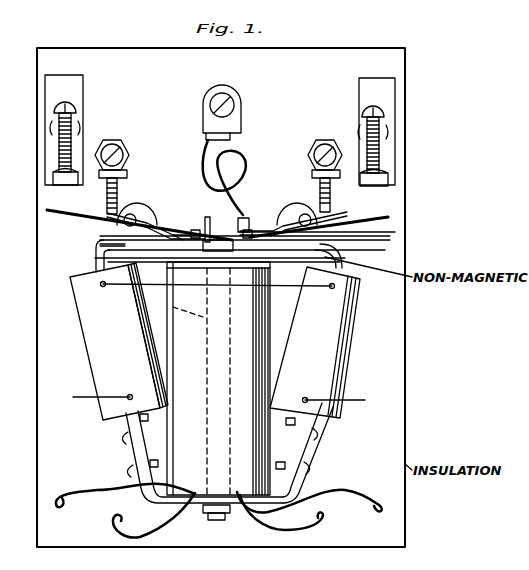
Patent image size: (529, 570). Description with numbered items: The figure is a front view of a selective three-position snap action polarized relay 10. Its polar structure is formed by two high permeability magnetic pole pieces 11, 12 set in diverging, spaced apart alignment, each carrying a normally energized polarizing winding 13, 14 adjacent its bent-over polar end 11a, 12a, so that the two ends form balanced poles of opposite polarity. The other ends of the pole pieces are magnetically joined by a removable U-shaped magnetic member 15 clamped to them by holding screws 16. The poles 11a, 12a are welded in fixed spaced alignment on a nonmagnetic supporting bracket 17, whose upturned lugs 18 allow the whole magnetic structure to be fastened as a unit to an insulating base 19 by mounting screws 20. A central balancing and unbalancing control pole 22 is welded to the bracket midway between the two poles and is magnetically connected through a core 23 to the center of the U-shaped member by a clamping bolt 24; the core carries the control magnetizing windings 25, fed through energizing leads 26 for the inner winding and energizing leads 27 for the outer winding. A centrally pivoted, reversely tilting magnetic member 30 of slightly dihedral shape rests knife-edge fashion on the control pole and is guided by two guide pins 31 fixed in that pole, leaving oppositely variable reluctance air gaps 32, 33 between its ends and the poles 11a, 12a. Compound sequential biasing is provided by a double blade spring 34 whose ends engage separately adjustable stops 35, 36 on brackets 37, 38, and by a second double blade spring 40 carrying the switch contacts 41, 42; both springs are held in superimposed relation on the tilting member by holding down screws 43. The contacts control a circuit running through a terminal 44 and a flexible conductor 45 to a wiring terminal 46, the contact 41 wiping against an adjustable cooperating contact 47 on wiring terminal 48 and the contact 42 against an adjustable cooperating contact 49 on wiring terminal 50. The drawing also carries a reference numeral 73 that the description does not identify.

The polarized relay 10 is at (351, 440).
The magnetic pole piece 11 is at (96, 262).
The bent-over polar end 11a is at (105, 242).
The magnetic pole piece 12 is at (338, 257).
The bent-over polar end 12a is at (302, 249).
The polarizing winding 13 is at (90, 350).
The polarizing winding 14 is at (352, 350).
The U-shaped magnetic member 15 is at (298, 494).
The holding screws 16 is at (127, 470).
The nonmagnetic supporting bracket 17 is at (162, 258).
The upturned lugs 18 is at (150, 201).
The base 19 is at (406, 197).
The mounting screws 20 is at (146, 222).
The central magnetic balancing and unbalancing control pole 22 is at (208, 236).
The core 23 is at (173, 307).
The clamping bolt 24 is at (201, 516).
The magnetizing windings 25 is at (262, 335).
The energizing leads 26 is at (332, 500).
The energizing leads 27 is at (130, 528).
The tilting magnetic flux conducting member 30 is at (335, 236).
The guide pins 31 is at (220, 240).
The variable reluctance air gap 32 is at (112, 234).
The variable reluctance air gap 33 is at (334, 241).
The double blade spring 34 is at (50, 215).
The adjustable stop 35 is at (62, 199).
The adjustable stop 36 is at (378, 200).
The bracket 37 is at (79, 97).
The bracket 38 is at (361, 96).
The double blade spring 40 is at (188, 224).
The switch contact 41 is at (112, 216).
The switch contact 42 is at (330, 212).
The holding down screws 43 is at (195, 229).
The terminal 44 is at (242, 218).
The flexible conductor 45 is at (244, 166).
The wiring terminal 46 is at (241, 108).
The adjustable cooperating contact 47 is at (119, 193).
The wiring terminal 48 is at (128, 152).
The adjustable cooperating contact 49 is at (322, 191).
The wiring terminal 50 is at (311, 156).
The pivot pin 73 is at (290, 291).